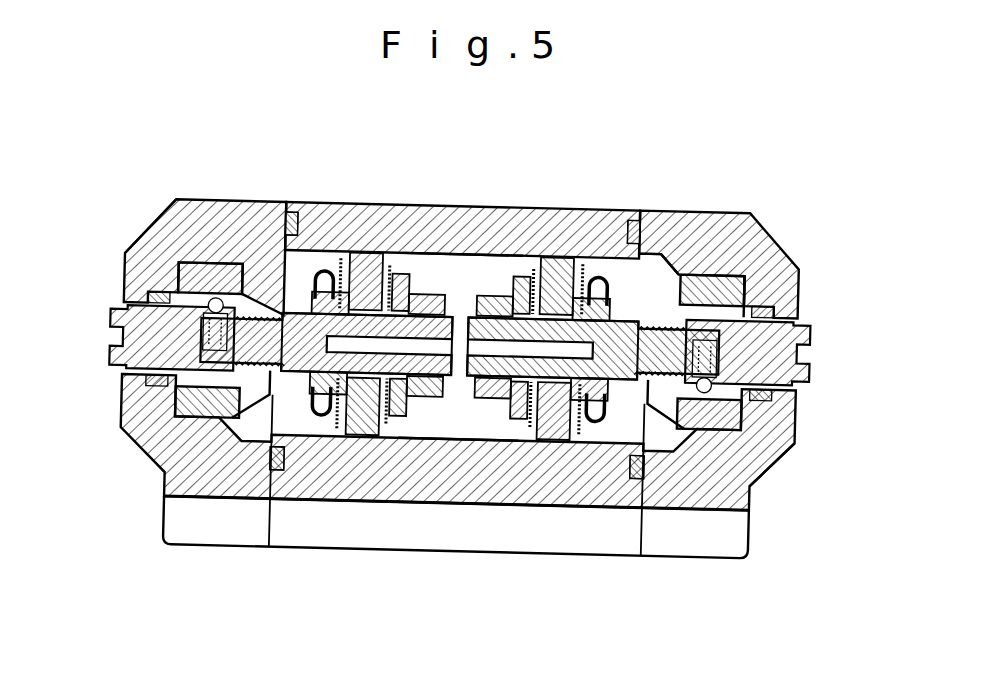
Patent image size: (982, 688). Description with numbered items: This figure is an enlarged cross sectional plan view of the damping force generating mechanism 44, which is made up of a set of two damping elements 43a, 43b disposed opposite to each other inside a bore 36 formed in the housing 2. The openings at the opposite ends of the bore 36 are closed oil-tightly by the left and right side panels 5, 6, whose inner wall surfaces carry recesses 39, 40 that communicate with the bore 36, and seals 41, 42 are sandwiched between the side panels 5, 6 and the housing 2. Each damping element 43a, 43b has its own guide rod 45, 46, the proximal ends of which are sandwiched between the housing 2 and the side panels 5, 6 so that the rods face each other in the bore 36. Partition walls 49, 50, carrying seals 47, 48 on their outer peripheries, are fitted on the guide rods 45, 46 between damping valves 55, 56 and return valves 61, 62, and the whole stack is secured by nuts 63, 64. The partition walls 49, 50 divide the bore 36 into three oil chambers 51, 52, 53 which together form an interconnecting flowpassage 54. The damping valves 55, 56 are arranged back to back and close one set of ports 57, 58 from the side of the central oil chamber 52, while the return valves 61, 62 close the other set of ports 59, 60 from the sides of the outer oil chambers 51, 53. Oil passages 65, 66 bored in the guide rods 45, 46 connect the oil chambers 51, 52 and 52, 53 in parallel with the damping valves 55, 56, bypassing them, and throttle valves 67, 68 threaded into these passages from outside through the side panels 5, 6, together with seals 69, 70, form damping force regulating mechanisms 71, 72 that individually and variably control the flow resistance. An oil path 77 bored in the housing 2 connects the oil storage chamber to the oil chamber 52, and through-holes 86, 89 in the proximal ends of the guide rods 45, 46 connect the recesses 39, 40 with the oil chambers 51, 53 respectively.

The housing 2 is at (457, 494).
The side panel 5 is at (163, 210).
The side panel 6 is at (757, 232).
The bore 36 is at (298, 432).
The recess 39 is at (166, 470).
The recess 40 is at (750, 498).
The seal 41 is at (262, 270).
The seal 42 is at (690, 268).
The damping element 43a is at (395, 382).
The damping element 43b is at (522, 382).
The damping force generating mechanism 44 is at (363, 628).
The guide rod 45 is at (140, 247).
The guide rod 46 is at (746, 290).
The seal 47 is at (332, 432).
The seal 48 is at (592, 282).
The partition wall 49 is at (336, 275).
The partition wall 50 is at (572, 440).
The oil chamber 51 is at (288, 290).
The oil chamber 52 is at (450, 275).
The oil chamber 53 is at (613, 437).
The interconnecting flowpassage 54 is at (438, 433).
The damping valve 55 is at (374, 262).
The damping valve 56 is at (556, 264).
The ports 57 is at (345, 297).
The ports 58 is at (526, 436).
The ports 59 is at (366, 433).
The ports 60 is at (655, 255).
The return valve 61 is at (288, 218).
The return valve 62 is at (636, 224).
The nut 63 is at (418, 437).
The nut 64 is at (493, 437).
The oil passage 65 is at (420, 298).
The oil passage 66 is at (482, 298).
The throttle valve 67 is at (150, 412).
The throttle valve 68 is at (716, 300).
The seal 69 is at (125, 300).
The seal 70 is at (760, 430).
The damping force regulating mechanism 71 is at (106, 368).
The damping force regulating mechanism 72 is at (810, 352).
The oil path 77 is at (517, 284).
The through-hole 86 is at (215, 262).
The through-hole 89 is at (677, 437).